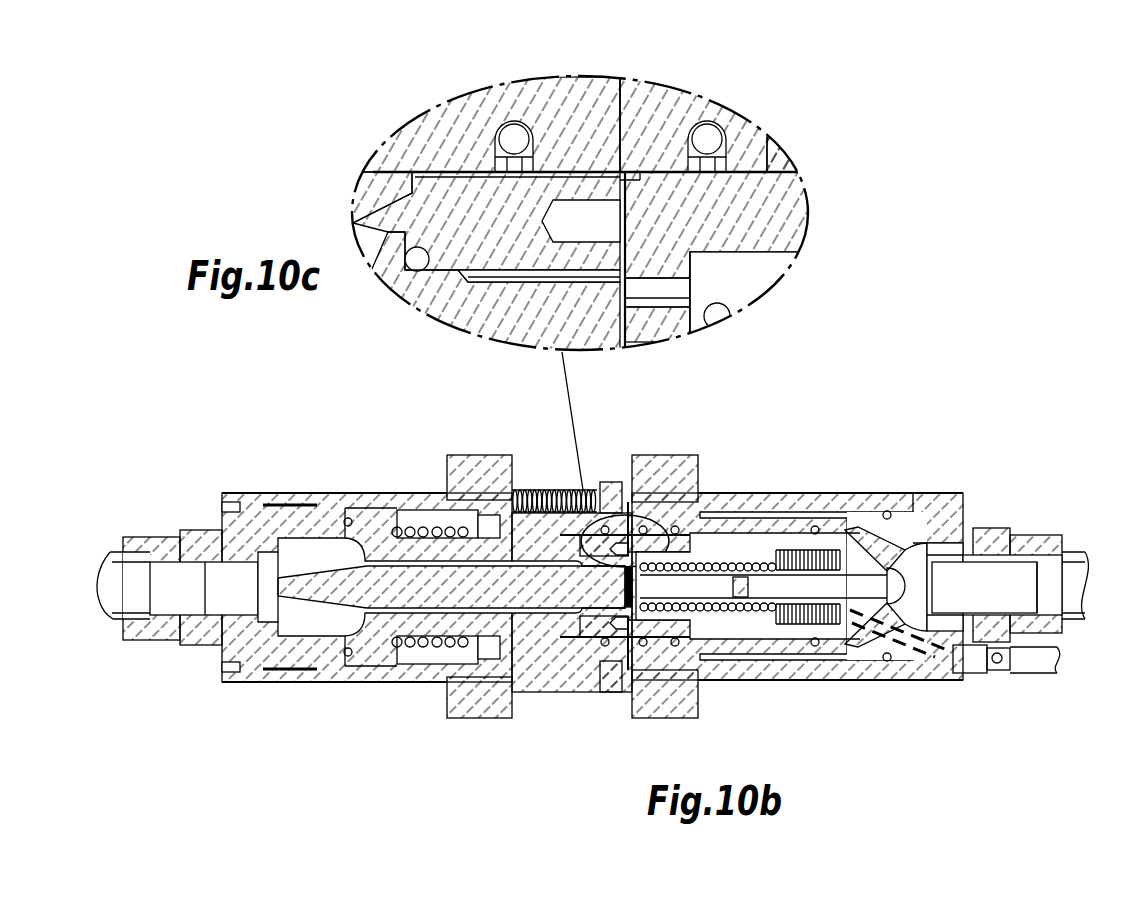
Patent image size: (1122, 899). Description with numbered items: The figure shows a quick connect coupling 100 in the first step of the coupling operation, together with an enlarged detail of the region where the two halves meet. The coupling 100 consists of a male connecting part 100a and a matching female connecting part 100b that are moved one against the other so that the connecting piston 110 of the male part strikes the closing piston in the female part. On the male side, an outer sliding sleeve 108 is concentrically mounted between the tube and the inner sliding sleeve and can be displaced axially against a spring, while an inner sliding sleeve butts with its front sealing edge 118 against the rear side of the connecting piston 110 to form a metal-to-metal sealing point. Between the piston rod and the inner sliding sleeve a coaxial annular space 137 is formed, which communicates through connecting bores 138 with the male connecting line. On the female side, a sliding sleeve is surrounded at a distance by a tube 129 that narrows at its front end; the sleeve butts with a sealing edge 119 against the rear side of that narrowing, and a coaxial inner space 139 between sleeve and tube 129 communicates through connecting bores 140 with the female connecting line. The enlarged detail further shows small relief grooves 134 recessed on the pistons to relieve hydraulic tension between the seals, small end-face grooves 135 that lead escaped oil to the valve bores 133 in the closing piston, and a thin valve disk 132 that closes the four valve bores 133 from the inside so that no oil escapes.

In FIG. 10B, the quick connect coupling 100 is at (457, 420).
In FIG. 10B, the male connecting part 100a is at (290, 658).
In FIG. 10B, the female connecting part 100b is at (913, 653).
In FIG. 10C, the outer sliding sleeve 108 is at (583, 112).
In FIG. 10B, the outer sliding sleeve 108 is at (575, 650).
In FIG. 10C, the connecting piston 110 is at (407, 243).
In FIG. 10C, the front sealing edge 118 is at (405, 187).
In FIG. 10C, the sealing edge 119 is at (775, 152).
In FIG. 10C, the tube 129 is at (650, 122).
In FIG. 10B, the tube 129 is at (825, 673).
In FIG. 10C, the valve disk 132 is at (699, 293).
In FIG. 10C, the valve bores 133 is at (658, 290).
In FIG. 10C, the relief grooves 134 is at (588, 171).
In FIG. 10C, the grooves 135 is at (634, 247).
In FIG. 10B, the annular space 137 is at (422, 620).
In FIG. 10B, the connecting bores 138 is at (300, 558).
In FIG. 10B, the inner space 139 is at (849, 532).
In FIG. 10B, the connecting bores 140 is at (882, 543).